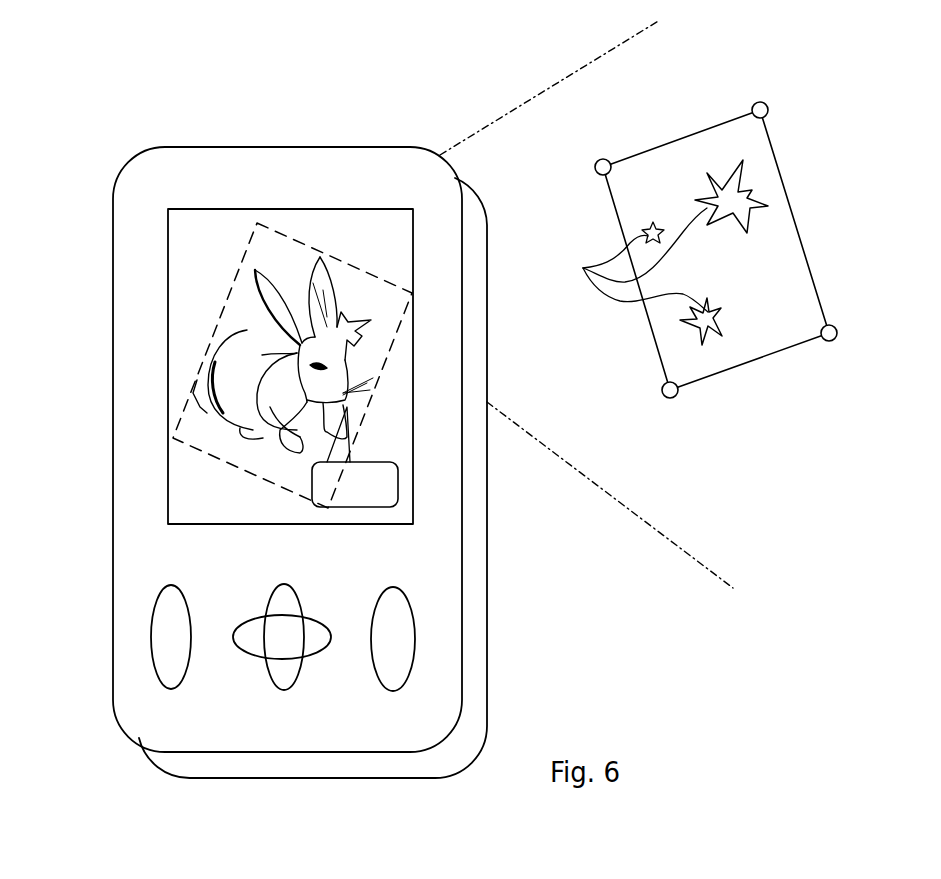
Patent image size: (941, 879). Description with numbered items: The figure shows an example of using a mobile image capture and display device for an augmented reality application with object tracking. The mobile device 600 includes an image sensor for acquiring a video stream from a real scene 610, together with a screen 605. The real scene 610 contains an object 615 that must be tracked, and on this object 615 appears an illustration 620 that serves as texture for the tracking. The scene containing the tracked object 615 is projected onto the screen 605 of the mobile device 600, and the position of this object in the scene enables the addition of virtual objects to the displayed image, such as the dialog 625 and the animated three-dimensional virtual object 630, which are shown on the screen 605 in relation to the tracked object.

The mobile device 600 is at (205, 148).
The screen 605 is at (168, 337).
The real scene 610 is at (827, 417).
The object 615 is at (782, 160).
The illustration 620 is at (658, 252).
The dialog 625 is at (380, 508).
The animated three-dimensional virtual object 630 is at (243, 338).